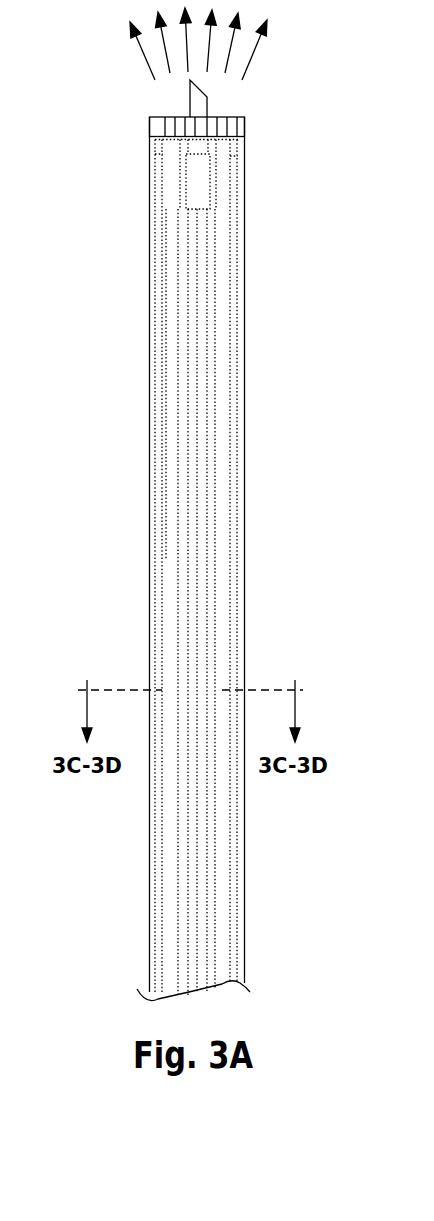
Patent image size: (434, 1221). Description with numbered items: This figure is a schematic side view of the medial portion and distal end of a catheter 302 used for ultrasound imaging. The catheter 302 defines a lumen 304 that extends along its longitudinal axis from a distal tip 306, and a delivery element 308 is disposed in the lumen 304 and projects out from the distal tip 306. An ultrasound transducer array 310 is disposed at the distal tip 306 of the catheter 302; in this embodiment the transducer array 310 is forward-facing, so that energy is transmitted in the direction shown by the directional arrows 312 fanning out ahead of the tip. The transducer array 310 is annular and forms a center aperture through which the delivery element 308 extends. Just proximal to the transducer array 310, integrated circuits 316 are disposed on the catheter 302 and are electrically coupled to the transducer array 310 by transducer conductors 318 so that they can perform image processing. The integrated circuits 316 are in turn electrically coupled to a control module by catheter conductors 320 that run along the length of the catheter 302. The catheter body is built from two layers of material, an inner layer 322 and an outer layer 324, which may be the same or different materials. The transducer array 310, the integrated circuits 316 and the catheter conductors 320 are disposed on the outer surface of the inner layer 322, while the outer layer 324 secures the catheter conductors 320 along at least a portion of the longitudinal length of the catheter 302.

The catheter 302 is at (299, 404).
The lumen 304 is at (182, 265).
The distal tip 306 is at (281, 172).
The delivery element 308 is at (192, 102).
The ultrasound transducer array 310 is at (165, 127).
The directional arrows 312 is at (142, 53).
The integrated circuits 316 is at (237, 192).
The lead wires 318 is at (165, 147).
The catheter conductors 320 is at (235, 577).
The inner layer 322 is at (173, 355).
The outer layer 324 is at (152, 452).